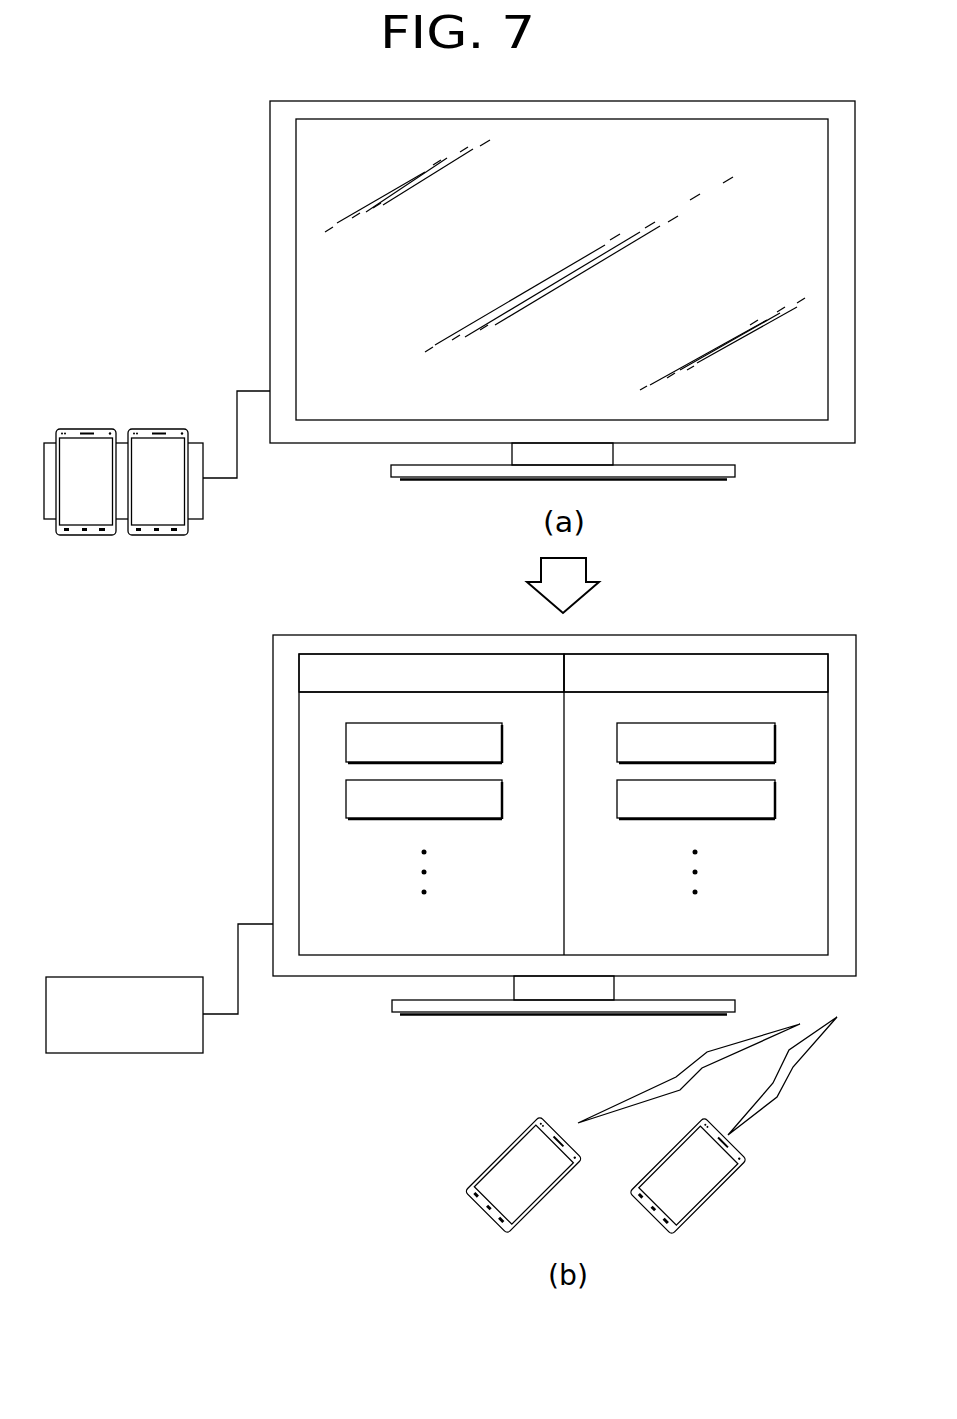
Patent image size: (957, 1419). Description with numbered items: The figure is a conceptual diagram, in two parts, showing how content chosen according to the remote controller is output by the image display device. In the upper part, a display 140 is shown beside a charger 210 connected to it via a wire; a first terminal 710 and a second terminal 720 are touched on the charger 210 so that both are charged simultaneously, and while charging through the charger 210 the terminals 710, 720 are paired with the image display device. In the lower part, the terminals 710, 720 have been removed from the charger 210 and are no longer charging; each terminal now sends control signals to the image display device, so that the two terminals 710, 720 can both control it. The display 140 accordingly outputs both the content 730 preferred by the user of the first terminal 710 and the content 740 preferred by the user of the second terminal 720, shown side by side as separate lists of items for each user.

The display 140 is at (270, 272).
The charger 210 is at (203, 500).
The first terminal 710 is at (86, 429).
The second terminal 720 is at (158, 429).
The content preferred by the user of the first terminal 730 is at (444, 656).
The content preferred by the user of the second terminal 740 is at (707, 656).